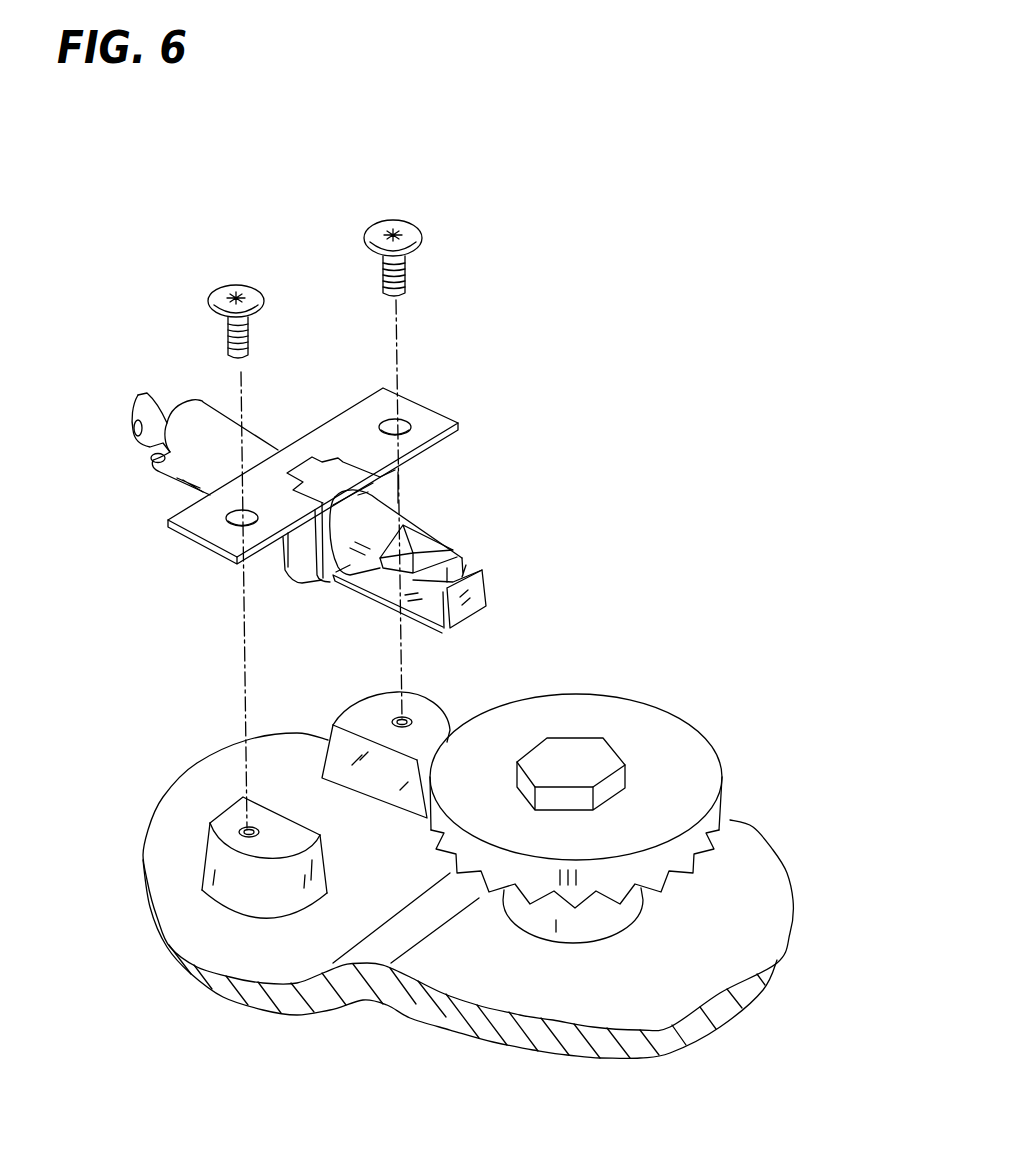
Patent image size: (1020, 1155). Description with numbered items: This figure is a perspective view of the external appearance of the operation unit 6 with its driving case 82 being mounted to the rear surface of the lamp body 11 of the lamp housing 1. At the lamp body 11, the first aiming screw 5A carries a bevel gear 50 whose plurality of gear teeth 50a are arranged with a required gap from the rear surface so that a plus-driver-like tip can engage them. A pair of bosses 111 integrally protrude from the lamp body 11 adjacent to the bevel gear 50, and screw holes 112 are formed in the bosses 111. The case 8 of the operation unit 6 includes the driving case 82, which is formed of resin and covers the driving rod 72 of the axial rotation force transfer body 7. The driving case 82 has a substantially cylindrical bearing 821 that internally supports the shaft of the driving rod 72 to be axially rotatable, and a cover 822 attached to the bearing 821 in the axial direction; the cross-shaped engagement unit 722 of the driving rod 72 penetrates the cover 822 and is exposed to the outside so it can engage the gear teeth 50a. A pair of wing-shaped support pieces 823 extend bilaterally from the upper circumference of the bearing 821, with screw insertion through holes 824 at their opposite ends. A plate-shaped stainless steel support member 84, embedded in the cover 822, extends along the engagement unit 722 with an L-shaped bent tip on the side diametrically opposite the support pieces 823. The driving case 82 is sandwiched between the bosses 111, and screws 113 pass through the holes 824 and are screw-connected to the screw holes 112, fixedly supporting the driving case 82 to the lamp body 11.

The lamp housing 1 is at (227, 997).
The lamp body 11 is at (535, 1035).
The bosses 111 is at (210, 870).
The screw holes 112 is at (245, 828).
The screws 113 is at (207, 300).
The first aiming screw 5A is at (616, 790).
The bevel gear 50 is at (685, 755).
The gear teeth 50a is at (728, 840).
The operation unit 6 is at (355, 507).
The axial rotation force transfer body 7 is at (470, 569).
The driving rod 72 is at (478, 557).
The engagement unit 722 is at (430, 550).
The case 8 is at (287, 492).
The driving case 82 is at (405, 493).
The bearing 821 is at (275, 557).
The cover 822 is at (307, 550).
The support pieces 823 is at (327, 432).
The screw insertion through holes 824 is at (407, 427).
The support member 84 is at (458, 627).